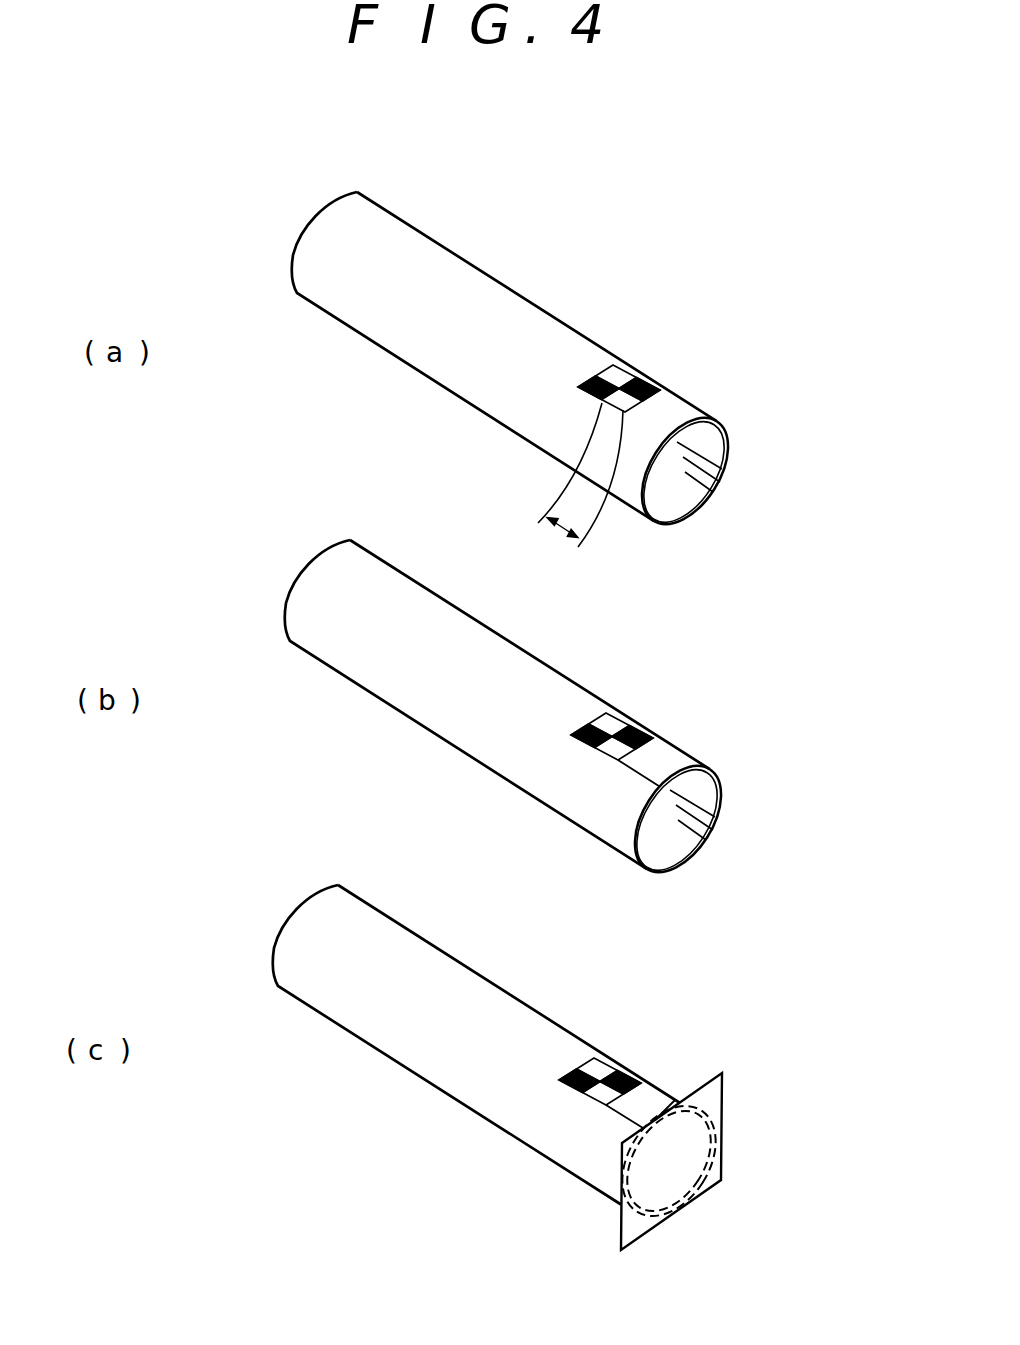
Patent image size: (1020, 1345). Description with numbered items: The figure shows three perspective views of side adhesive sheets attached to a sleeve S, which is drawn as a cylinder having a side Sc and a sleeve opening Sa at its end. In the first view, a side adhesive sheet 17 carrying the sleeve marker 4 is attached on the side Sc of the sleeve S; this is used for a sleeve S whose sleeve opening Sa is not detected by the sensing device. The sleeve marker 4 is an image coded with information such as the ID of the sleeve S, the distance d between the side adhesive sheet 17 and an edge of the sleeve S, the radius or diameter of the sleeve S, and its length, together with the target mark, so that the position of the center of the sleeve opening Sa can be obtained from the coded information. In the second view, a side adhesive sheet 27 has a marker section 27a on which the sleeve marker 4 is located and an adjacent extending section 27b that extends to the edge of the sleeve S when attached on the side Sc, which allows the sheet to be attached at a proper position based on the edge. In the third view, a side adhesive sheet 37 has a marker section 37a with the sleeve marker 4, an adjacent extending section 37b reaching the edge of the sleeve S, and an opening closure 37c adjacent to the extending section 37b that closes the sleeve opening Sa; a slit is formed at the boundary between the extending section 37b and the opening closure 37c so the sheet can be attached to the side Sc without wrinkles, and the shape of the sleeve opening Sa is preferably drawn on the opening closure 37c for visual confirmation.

The sleeve S is at (468, 244).
The side of the sleeve Sc is at (488, 349).
The sleeve opening Sa is at (733, 428).
The sleeve marker 4 is at (603, 403).
The side adhesive sheet 17 is at (653, 378).
The distance between the side adhesive sheet and an edge of the sleeve d is at (562, 541).
The side adhesive sheet 27 is at (718, 692).
The marker section 27a is at (662, 729).
The extending section 27b is at (707, 752).
The side adhesive sheet 37 is at (785, 1088).
The marker section 37a is at (644, 1076).
The extending section 37b is at (687, 1098).
The opening closure 37c is at (722, 1148).